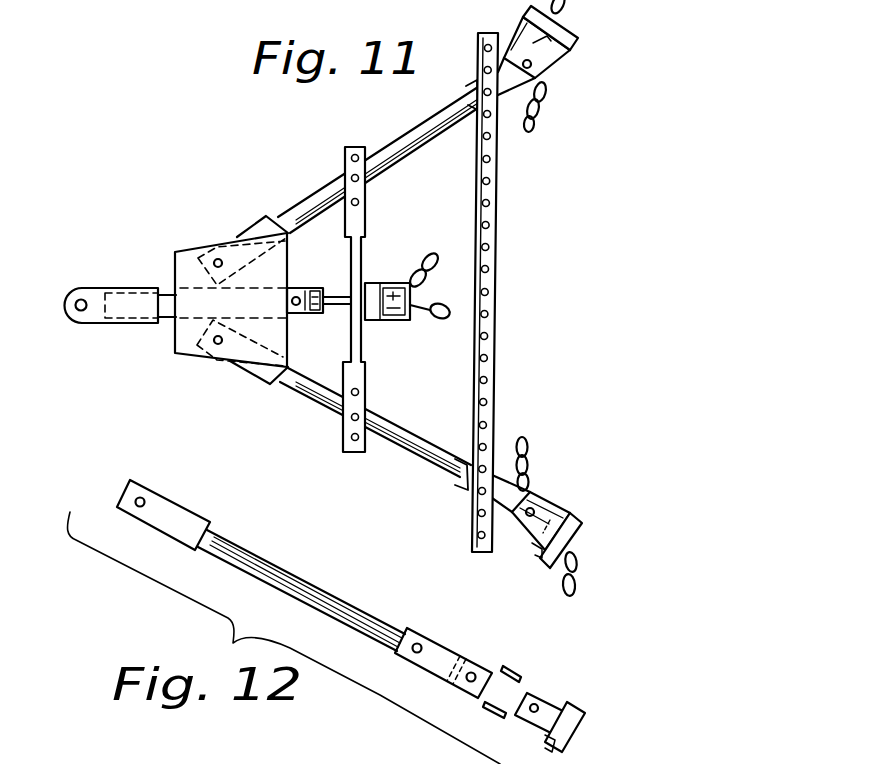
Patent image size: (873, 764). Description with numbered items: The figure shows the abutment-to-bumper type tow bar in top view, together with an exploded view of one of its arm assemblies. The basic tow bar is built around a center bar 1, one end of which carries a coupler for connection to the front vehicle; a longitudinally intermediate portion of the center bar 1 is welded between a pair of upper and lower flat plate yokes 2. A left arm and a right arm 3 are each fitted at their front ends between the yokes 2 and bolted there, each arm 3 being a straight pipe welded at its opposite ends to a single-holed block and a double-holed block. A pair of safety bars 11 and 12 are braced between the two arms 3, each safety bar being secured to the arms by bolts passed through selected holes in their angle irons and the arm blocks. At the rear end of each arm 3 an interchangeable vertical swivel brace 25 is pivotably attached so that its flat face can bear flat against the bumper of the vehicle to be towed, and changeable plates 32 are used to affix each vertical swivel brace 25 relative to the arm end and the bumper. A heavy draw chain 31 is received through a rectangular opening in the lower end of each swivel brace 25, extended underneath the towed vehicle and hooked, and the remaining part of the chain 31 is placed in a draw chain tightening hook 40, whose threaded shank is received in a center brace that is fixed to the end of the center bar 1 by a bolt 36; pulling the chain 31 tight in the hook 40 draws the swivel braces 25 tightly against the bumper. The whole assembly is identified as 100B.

In FIG. 11, the center bar 1 is at (167, 326).
In FIG. 11, the flat plate yokes 2 is at (188, 347).
In FIG. 11, the arm 3 is at (424, 114).
In FIG. 12, the arm 3 is at (369, 611).
In FIG. 11, the safety bar 11 is at (372, 255).
In FIG. 11, the safety bar 12 is at (508, 218).
In FIG. 11, the vertical swivel brace 25 is at (578, 36).
In FIG. 12, the vertical swivel brace 25 is at (554, 700).
In FIG. 11, the draw chain 31 is at (433, 330).
In FIG. 12, the changeable plates 32 is at (540, 632).
In FIG. 11, the bolt 36 is at (296, 309).
In FIG. 11, the draw chain tightening hook 40 is at (390, 323).
In FIG. 11, the hitch assembly 100B is at (656, 306).